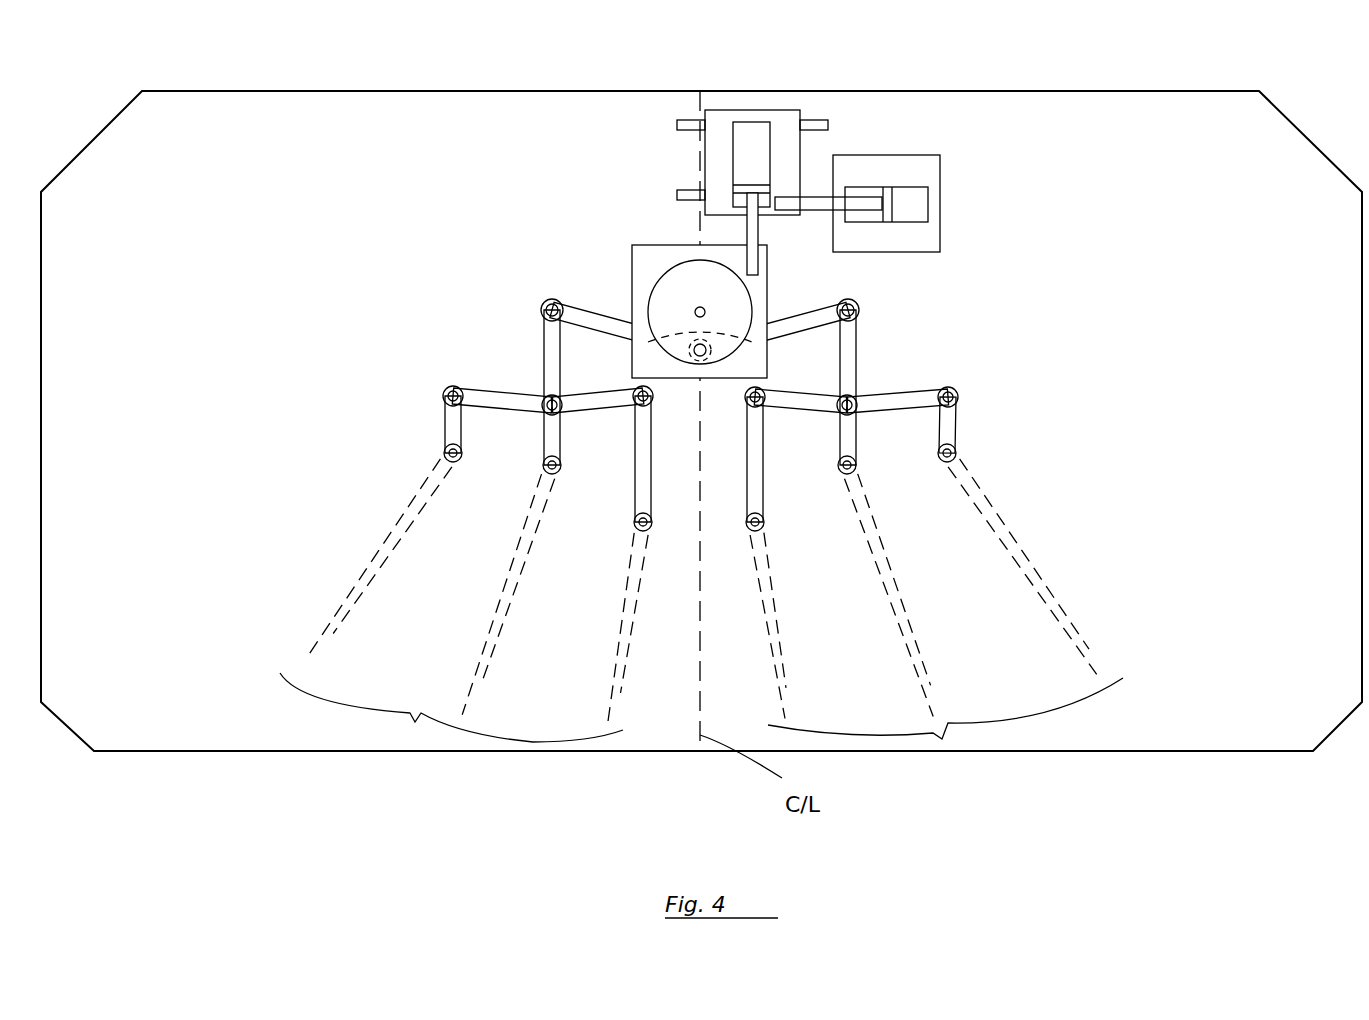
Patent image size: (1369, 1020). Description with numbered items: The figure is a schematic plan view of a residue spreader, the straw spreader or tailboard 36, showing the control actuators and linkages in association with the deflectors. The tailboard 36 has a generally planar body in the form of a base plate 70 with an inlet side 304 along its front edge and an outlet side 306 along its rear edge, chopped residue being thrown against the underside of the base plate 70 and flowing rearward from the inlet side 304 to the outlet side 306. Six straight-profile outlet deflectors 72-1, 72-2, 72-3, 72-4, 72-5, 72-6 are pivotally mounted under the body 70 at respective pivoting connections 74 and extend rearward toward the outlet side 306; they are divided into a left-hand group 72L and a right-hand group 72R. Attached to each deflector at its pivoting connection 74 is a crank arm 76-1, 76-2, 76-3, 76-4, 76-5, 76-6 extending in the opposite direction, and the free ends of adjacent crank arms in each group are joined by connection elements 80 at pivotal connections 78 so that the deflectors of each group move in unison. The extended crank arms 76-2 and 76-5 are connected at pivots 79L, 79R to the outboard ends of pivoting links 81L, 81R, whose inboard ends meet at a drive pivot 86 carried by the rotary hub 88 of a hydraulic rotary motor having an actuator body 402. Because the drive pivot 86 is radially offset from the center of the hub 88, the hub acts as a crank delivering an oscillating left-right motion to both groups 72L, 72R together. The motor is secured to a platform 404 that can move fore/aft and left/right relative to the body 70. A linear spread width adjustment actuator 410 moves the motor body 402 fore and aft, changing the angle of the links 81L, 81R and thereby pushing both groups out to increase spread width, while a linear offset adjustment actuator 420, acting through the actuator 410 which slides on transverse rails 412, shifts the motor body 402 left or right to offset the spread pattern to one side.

The straw spreader or tailboard 36 is at (92, 76).
The base plate 70 is at (1235, 752).
The inlet side 304 is at (1055, 89).
The outlet side 306 is at (1050, 752).
The spread width adjustment actuator 410 is at (771, 145).
The transverse rails 412 is at (677, 125).
The offset adjustment actuator 420 is at (915, 190).
The actuator body 402 is at (624, 236).
The platform 404 is at (632, 270).
The rotary hub 88 is at (755, 306).
The drive pivot 86 is at (697, 358).
The left pivoting link 81L is at (580, 310).
The right pivoting link 81R is at (815, 315).
The left pivot 79L is at (540, 308).
The right pivot 79R is at (860, 310).
The pivotal connection 78 is at (445, 392).
The connection element 80 is at (488, 396).
The crank arm 76-1 is at (445, 422).
The extended crank arm 76-2 is at (545, 432).
The crank arm 76-3 is at (652, 470).
The crank arm 76-4 is at (763, 485).
The extended crank arm 76-5 is at (856, 440).
The crank arm 76-6 is at (956, 420).
The pivoting connection 74 is at (444, 453).
The outlet deflector 72-1 is at (322, 628).
The outlet deflector 72-2 is at (475, 665).
The outlet deflector 72-3 is at (613, 663).
The outlet deflector 72-4 is at (788, 668).
The outlet deflector 72-5 is at (935, 675).
The outlet deflector 72-6 is at (1050, 595).
The left-hand group of outlet deflectors 72L is at (417, 722).
The right-hand group of outlet deflectors 72R is at (942, 737).